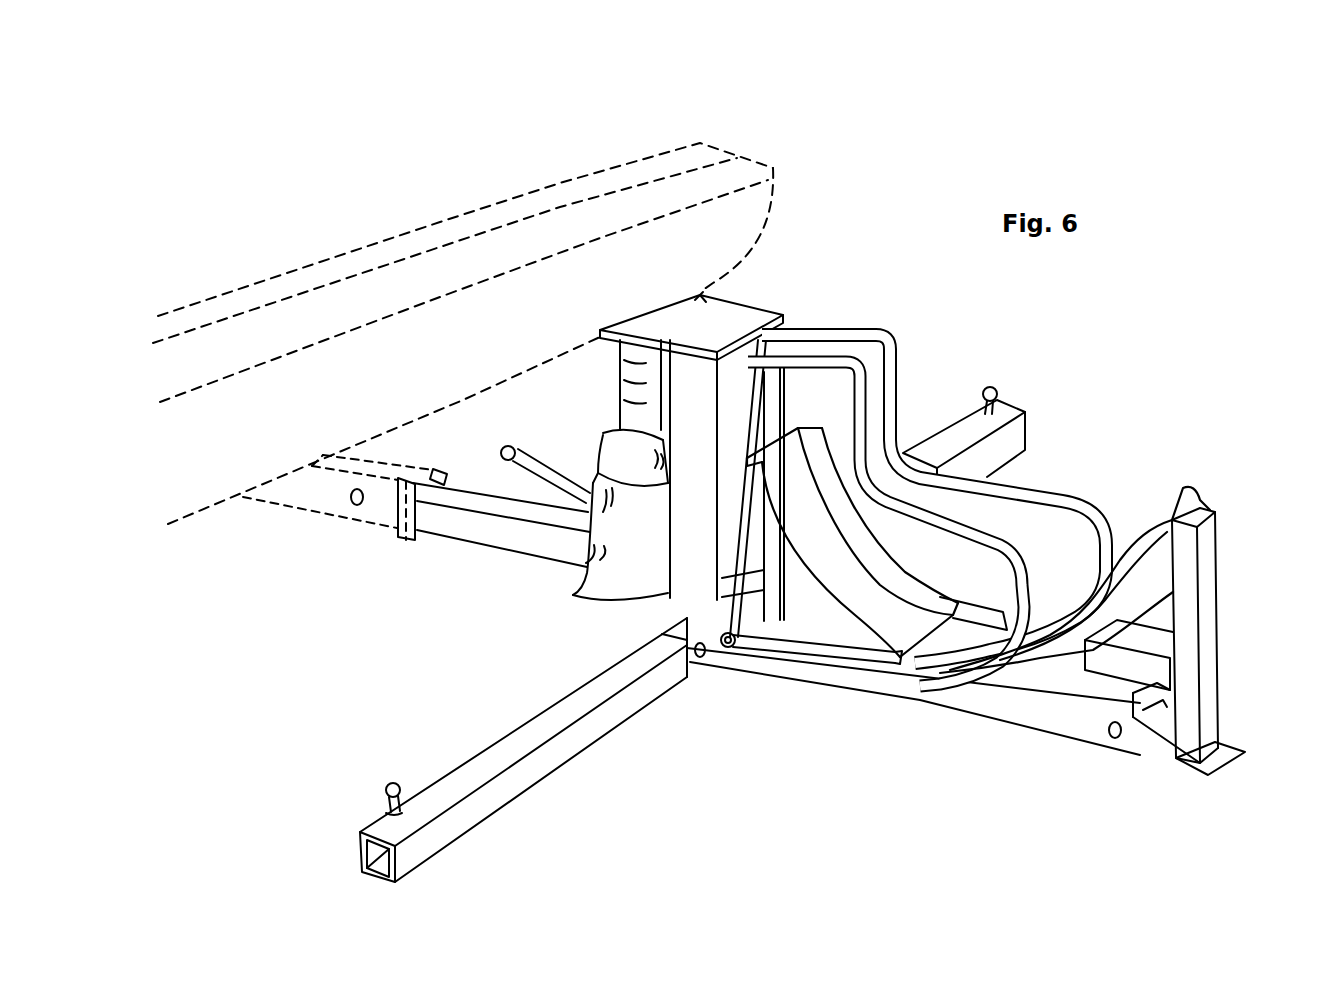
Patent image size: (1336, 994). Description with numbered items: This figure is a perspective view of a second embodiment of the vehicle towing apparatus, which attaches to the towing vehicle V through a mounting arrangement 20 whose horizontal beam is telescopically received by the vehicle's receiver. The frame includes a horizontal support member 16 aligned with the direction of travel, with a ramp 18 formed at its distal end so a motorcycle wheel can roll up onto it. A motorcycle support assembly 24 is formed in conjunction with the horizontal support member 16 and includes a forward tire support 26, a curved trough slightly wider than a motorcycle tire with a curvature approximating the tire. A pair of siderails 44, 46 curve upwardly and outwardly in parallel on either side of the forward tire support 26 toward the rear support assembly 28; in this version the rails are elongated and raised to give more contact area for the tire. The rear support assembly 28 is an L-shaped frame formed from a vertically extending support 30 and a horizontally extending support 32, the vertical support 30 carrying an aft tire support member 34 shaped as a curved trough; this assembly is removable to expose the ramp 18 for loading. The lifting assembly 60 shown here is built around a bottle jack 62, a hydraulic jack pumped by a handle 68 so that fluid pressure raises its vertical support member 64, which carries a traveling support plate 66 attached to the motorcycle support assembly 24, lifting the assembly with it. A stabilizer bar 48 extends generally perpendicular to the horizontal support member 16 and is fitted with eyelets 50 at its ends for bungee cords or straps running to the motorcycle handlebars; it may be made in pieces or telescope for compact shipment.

The towing vehicle V is at (463, 230).
The horizontal support member 16 is at (807, 677).
The ramp 18 is at (1210, 780).
The mounting arrangement 20 is at (387, 568).
The motorcycle support assembly 24 is at (750, 630).
The forward tire support 26 is at (880, 607).
The rear support assembly 28 is at (1127, 649).
The vertically extending support 30 is at (1207, 640).
The horizontally extending support 32 is at (1133, 713).
The aft tire support member 34 is at (1037, 657).
The siderail 44 is at (1017, 562).
The siderail 46 is at (1067, 492).
The stabilizer bar 48 is at (460, 810).
The eyelet 50 is at (383, 793).
The lifting assembly 60 is at (624, 445).
The bottle jack 62 is at (592, 566).
The vertical support member 64 is at (625, 410).
The traveling support plate 66 is at (743, 323).
The handle 68 is at (522, 432).